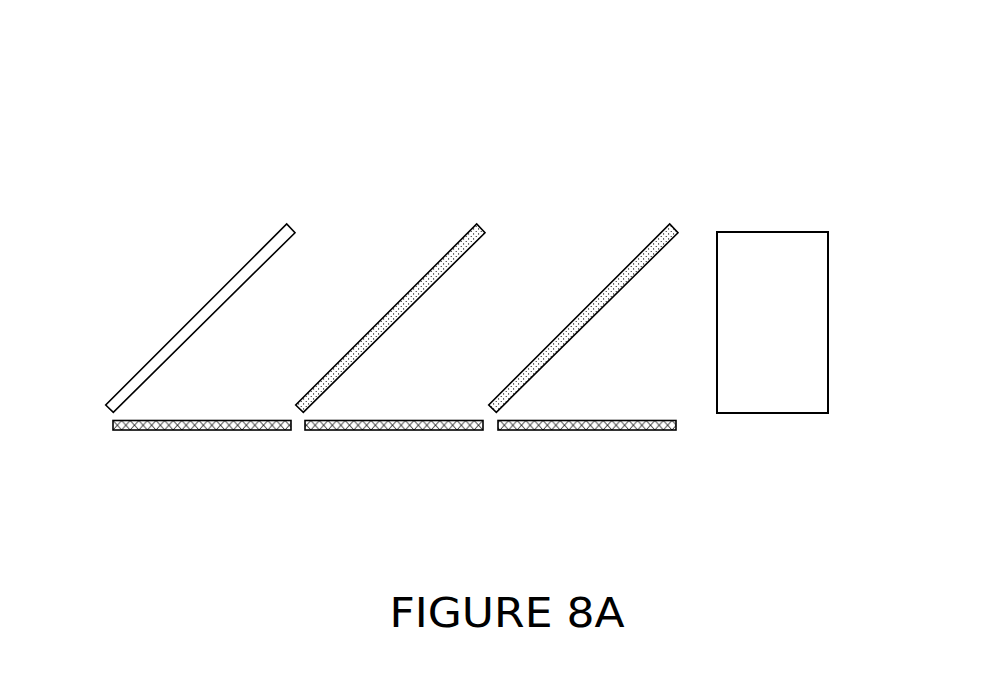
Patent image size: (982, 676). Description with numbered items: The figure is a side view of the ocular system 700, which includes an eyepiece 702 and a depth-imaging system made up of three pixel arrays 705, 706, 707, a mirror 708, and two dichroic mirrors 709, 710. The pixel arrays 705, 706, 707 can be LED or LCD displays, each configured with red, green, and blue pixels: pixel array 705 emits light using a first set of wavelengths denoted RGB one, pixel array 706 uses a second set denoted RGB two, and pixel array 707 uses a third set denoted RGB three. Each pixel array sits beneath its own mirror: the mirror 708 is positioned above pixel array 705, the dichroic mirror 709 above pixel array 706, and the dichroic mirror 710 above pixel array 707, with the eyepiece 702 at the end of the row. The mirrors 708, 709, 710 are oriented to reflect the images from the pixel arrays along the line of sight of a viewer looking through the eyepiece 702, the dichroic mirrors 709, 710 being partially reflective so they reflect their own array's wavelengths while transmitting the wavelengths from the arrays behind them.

The ocular system 700 is at (710, 99).
The eyepiece 702 is at (750, 378).
The pixel array 705 is at (138, 430).
The pixel array 706 is at (340, 430).
The pixel array 707 is at (533, 430).
The mirror 708 is at (235, 273).
The dichroic mirror 709 is at (425, 273).
The dichroic mirror 710 is at (623, 273).